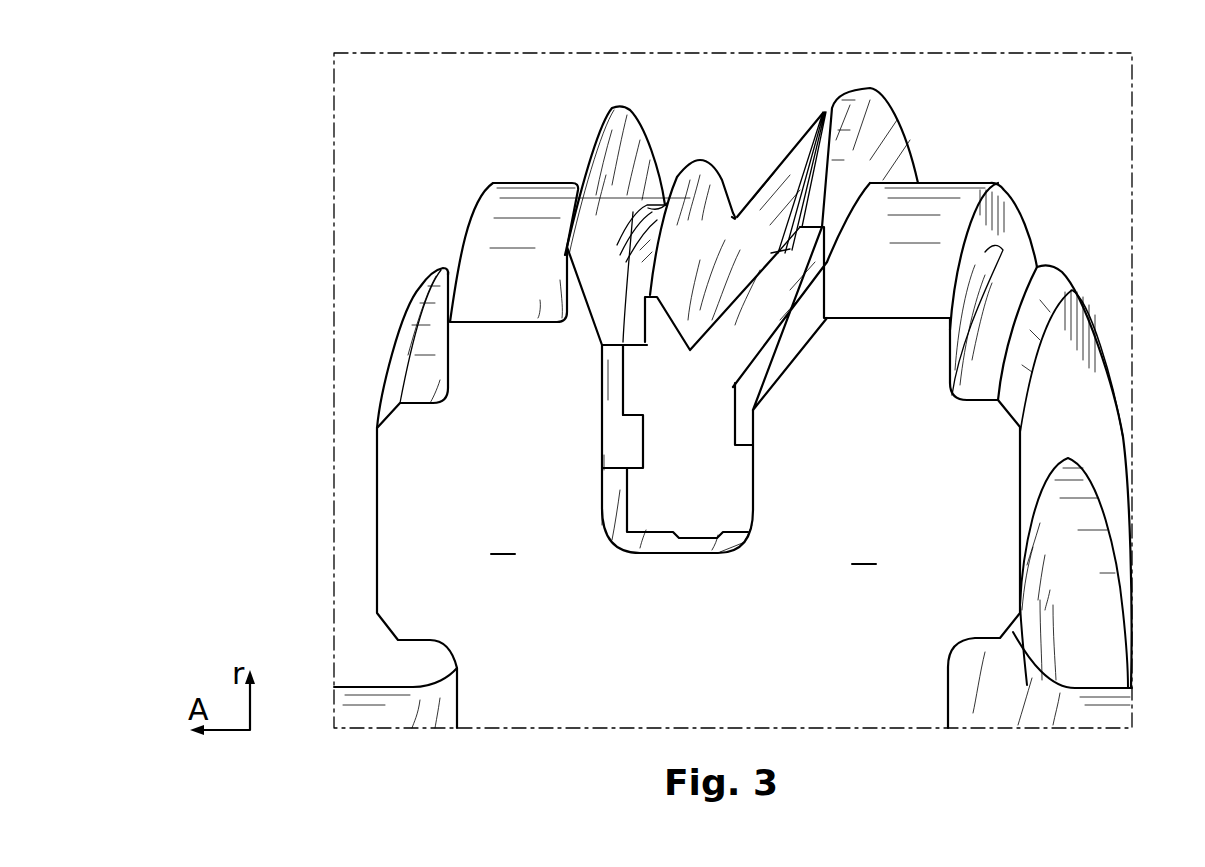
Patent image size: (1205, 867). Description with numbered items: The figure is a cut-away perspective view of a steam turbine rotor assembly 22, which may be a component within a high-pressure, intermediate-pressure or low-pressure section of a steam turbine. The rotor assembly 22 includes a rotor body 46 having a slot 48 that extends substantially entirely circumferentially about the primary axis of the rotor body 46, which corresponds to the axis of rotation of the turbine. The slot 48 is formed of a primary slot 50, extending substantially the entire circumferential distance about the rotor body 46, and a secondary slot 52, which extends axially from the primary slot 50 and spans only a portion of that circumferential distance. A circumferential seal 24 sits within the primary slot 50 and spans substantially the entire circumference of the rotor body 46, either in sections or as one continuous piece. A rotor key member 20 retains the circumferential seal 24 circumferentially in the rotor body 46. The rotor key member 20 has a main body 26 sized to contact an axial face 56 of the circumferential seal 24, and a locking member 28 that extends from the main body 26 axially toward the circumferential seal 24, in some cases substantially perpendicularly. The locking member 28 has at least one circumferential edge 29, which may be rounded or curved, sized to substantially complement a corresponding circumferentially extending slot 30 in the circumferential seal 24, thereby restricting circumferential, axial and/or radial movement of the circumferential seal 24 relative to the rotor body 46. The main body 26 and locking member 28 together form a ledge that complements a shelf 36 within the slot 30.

The rotor key member 20 is at (609, 446).
The steam turbine rotor assembly 22 is at (292, 80).
The circumferential seal 24 is at (671, 522).
The main body 26 is at (617, 318).
The locking member 28 is at (608, 463).
The circumferential edge 29 is at (624, 236).
The circumferentially extending slot 30 is at (658, 442).
The shelf 36 is at (654, 407).
The rotor body 46 is at (733, 455).
The slot 48 is at (663, 584).
The primary slot 50 is at (735, 559).
The secondary slot 52 is at (592, 530).
The axial face 56 is at (612, 383).